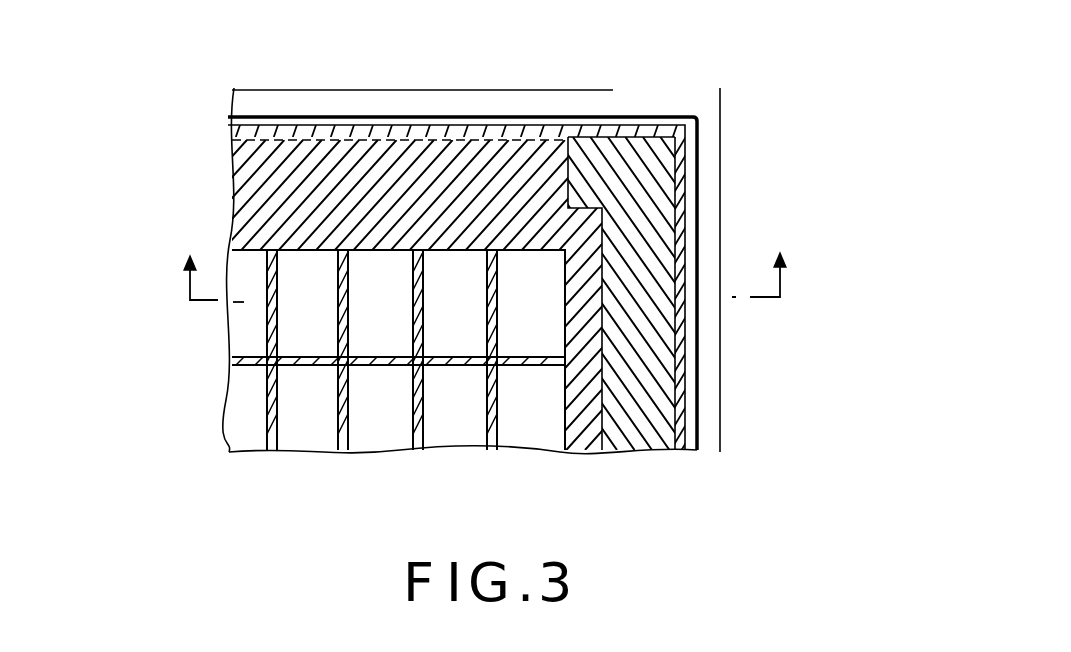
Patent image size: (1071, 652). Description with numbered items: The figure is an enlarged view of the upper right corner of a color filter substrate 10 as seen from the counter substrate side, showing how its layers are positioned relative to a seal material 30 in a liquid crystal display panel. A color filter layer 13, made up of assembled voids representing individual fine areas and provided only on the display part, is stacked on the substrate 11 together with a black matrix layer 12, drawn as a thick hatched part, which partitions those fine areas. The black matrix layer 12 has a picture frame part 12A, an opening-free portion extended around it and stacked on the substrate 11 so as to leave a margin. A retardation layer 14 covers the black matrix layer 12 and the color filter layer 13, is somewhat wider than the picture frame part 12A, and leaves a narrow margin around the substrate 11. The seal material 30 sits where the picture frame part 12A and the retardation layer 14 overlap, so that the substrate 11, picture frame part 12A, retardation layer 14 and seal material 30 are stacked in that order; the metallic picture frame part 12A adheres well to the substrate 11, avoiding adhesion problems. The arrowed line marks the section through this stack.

The color filter substrate 10 is at (205, 112).
The substrate 11 is at (693, 88).
The black matrix layer 12 is at (386, 368).
The picture frame part 12A is at (265, 230).
The color filter layer 13 is at (452, 408).
The retardation layer 14 is at (374, 118).
The seal material 30 is at (655, 170).